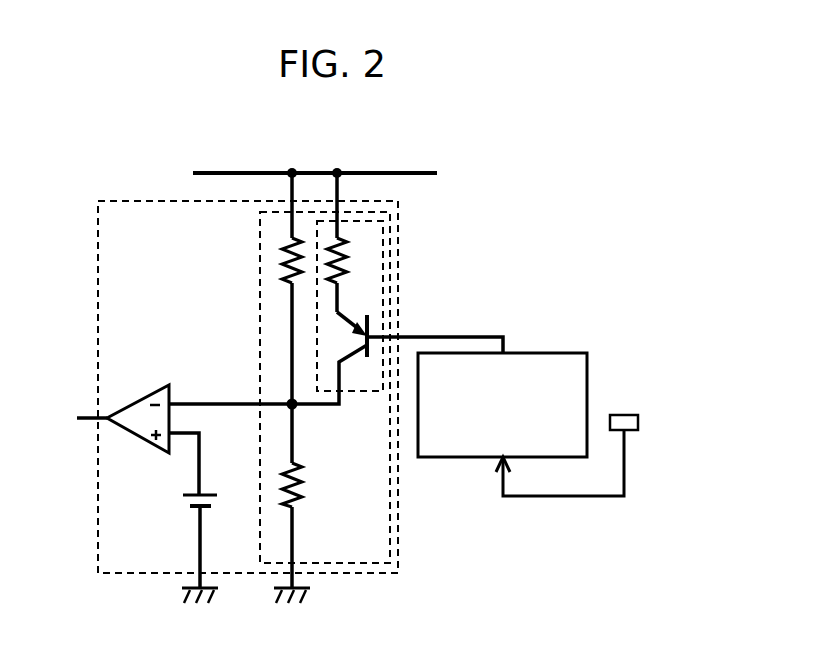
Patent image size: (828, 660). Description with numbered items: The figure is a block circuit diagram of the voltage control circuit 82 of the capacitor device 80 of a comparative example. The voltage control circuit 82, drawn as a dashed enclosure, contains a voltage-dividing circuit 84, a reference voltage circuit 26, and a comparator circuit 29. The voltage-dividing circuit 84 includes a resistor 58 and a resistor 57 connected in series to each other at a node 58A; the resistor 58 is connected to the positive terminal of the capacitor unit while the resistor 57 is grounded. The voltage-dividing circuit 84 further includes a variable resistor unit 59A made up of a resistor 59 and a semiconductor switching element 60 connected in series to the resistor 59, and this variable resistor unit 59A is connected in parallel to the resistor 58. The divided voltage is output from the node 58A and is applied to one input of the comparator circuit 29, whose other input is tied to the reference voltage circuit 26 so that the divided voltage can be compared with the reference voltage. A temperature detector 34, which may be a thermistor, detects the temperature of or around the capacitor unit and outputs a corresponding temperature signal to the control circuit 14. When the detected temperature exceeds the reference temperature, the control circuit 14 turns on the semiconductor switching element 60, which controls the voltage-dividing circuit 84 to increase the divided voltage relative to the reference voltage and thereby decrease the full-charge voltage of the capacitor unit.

The control circuit 14 is at (558, 352).
The reference voltage circuit 26 is at (182, 504).
The comparator circuit 29 is at (160, 386).
The temperature detector 34 is at (626, 413).
The resistor 57 is at (305, 488).
The resistor 58 is at (282, 258).
The node 58A is at (290, 402).
The resistor 59 is at (355, 256).
The variable resistor unit 59A is at (362, 221).
The semiconductor switching element 60 is at (373, 325).
The capacitor device 80 is at (560, 238).
The voltage control circuit 82 is at (142, 200).
The voltage-dividing circuit 84 is at (260, 215).